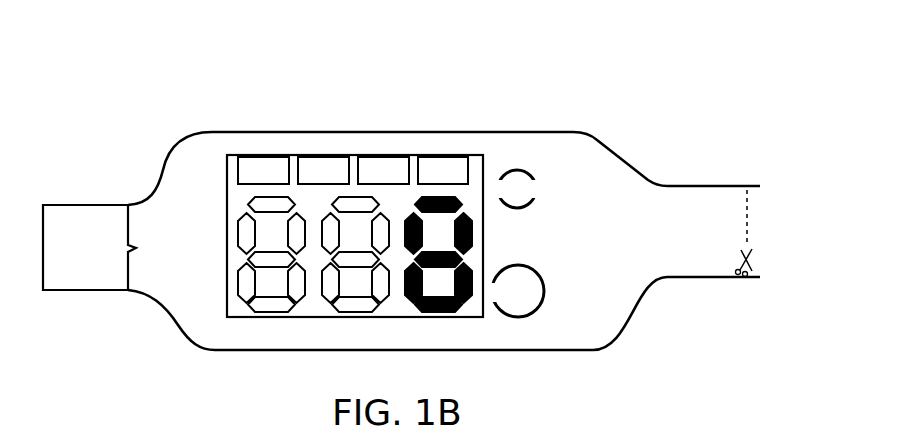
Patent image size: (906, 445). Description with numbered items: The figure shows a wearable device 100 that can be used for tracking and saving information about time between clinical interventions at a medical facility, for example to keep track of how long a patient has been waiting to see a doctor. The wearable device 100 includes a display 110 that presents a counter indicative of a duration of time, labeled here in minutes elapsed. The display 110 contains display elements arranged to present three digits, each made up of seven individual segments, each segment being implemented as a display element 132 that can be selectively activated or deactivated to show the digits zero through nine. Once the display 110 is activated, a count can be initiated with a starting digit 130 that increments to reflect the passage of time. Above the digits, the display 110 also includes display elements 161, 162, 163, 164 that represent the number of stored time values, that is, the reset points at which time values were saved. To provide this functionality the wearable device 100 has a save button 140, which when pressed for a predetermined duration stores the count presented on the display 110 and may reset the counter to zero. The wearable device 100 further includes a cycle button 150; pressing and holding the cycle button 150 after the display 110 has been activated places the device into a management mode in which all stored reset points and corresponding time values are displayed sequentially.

The wearable device 100 is at (587, 183).
The display 110 is at (250, 200).
The starting digit 130 is at (382, 242).
The display element 132 is at (410, 280).
The save button 140 is at (512, 303).
The cycle button 150 is at (519, 177).
The display element 161 is at (263, 177).
The display element 162 is at (320, 178).
The display element 163 is at (383, 175).
The display element 164 is at (430, 173).